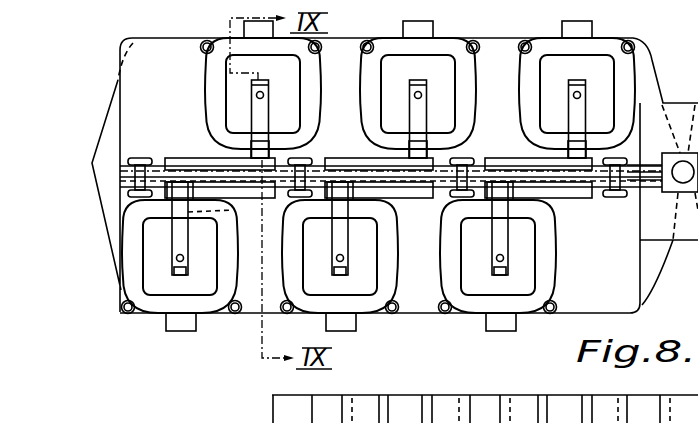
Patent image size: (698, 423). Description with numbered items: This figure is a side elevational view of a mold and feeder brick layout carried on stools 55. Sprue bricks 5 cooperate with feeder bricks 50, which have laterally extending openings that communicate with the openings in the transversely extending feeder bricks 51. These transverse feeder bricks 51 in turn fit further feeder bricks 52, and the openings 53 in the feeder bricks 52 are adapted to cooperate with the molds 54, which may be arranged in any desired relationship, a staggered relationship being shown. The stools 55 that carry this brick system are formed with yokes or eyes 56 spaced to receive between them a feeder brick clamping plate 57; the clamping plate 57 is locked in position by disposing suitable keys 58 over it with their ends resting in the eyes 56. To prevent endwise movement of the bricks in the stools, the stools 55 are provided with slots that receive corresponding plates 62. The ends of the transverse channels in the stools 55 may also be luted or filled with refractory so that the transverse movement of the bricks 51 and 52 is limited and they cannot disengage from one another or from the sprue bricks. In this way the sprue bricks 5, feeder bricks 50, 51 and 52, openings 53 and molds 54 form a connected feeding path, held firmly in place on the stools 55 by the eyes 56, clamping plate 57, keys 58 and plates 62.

The sprue brick 5 is at (647, 165).
The feeder brick 50 is at (557, 197).
The transversely extending feeder brick 51 is at (548, 137).
The feeder brick 52 is at (182, 240).
The opening 53 is at (183, 258).
The mold 54 is at (380, 80).
The stool 55 is at (618, 294).
The yoke or eye 56 is at (614, 193).
The feeder brick clamping plate 57 is at (398, 190).
The key 58 is at (628, 186).
The plate 62 is at (170, 160).